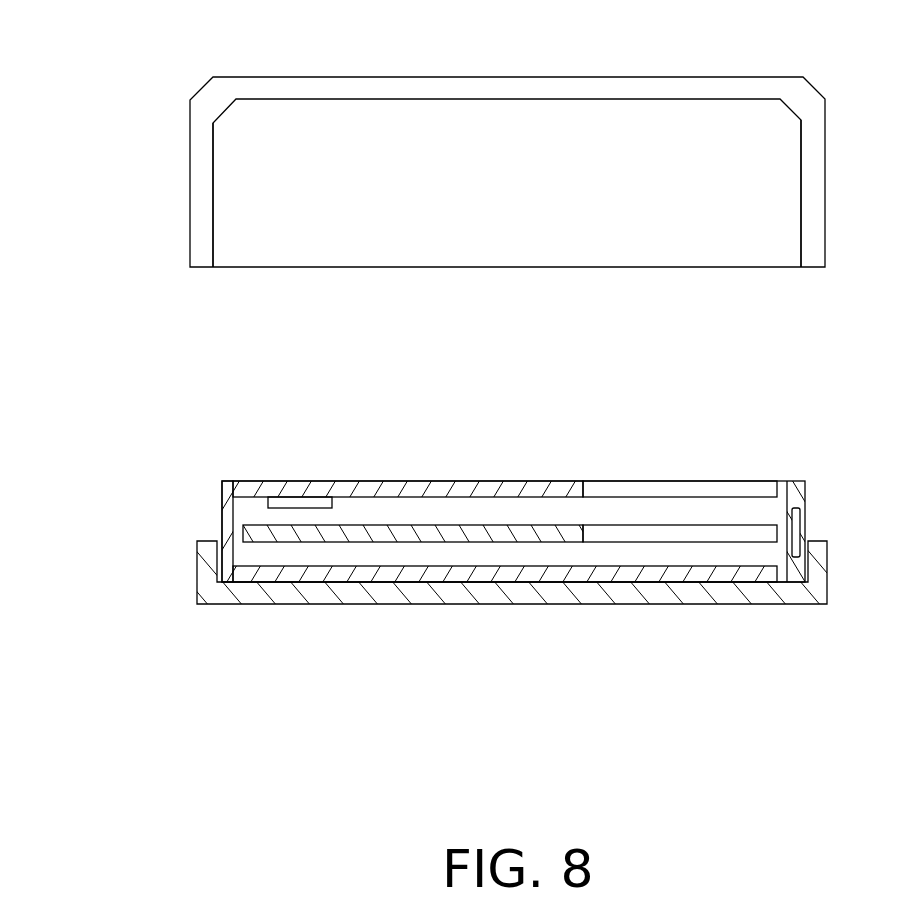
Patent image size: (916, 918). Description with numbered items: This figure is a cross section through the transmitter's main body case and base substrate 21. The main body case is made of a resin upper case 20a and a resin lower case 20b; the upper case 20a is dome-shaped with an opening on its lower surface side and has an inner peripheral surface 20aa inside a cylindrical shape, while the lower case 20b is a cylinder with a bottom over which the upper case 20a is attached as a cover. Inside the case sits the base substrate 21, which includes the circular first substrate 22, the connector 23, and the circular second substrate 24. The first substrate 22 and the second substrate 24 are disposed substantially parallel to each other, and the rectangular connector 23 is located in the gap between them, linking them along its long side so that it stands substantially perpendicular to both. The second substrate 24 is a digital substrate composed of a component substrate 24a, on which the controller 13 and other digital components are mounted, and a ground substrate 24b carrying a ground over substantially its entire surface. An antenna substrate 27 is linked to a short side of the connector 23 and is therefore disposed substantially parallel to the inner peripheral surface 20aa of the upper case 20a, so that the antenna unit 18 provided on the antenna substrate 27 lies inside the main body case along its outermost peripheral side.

The upper case 20a is at (598, 90).
The inner peripheral surface 20aa is at (213, 207).
The lower case 20b is at (198, 577).
The base substrate 21 is at (494, 536).
The controller 13 is at (283, 502).
The connector 23 is at (224, 498).
The first substrate 22 is at (577, 577).
The second substrate 24 is at (505, 470).
The component substrate 24a is at (363, 487).
The ground substrate 24b is at (388, 530).
The antenna substrate 27 is at (685, 513).
The antenna unit 18 is at (802, 523).